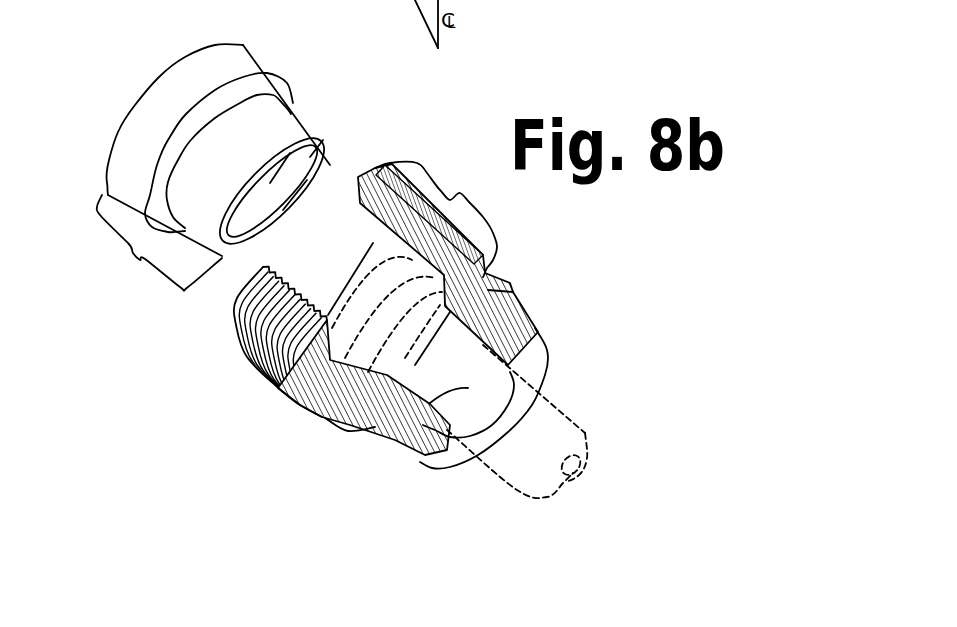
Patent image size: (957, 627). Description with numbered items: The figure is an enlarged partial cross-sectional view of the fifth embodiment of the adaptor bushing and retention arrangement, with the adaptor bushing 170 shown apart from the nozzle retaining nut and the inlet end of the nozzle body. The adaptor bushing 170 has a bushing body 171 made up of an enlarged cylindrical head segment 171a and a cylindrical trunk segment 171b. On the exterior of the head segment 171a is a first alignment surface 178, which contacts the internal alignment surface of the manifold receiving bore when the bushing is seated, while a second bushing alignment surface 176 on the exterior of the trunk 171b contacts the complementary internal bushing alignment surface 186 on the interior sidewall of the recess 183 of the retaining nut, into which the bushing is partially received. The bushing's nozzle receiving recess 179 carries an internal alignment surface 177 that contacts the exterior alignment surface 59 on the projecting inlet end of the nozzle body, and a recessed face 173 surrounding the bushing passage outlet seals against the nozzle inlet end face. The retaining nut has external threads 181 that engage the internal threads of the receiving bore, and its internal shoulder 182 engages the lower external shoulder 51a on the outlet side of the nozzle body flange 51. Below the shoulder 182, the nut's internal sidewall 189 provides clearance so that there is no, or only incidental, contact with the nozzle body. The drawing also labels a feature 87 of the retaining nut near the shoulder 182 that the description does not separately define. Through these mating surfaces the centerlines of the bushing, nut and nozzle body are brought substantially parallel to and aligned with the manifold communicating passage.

The adaptor bushing 170 is at (212, 169).
The bushing body 171 is at (131, 259).
The enlarged cylindrical head segment 171a is at (206, 103).
The cylindrical trunk segment 171b is at (245, 163).
The recessed face 173 is at (313, 130).
The second bushing external alignment surface 176 is at (284, 126).
The internal alignment surface 177 is at (303, 155).
The first alignment surface 178 is at (240, 66).
The nozzle receiving recess 179 is at (243, 240).
The external threads 181 is at (460, 244).
The internal shoulder 182 is at (455, 292).
The shoulder 87 is at (514, 303).
The recess 183 is at (407, 358).
The internal bushing alignment surface 186 is at (350, 296).
The exterior alignment surface 59 is at (283, 378).
The nozzle body flange 51 is at (407, 383).
The lower external shoulder 51a is at (352, 428).
The internal sidewall 189 is at (398, 440).